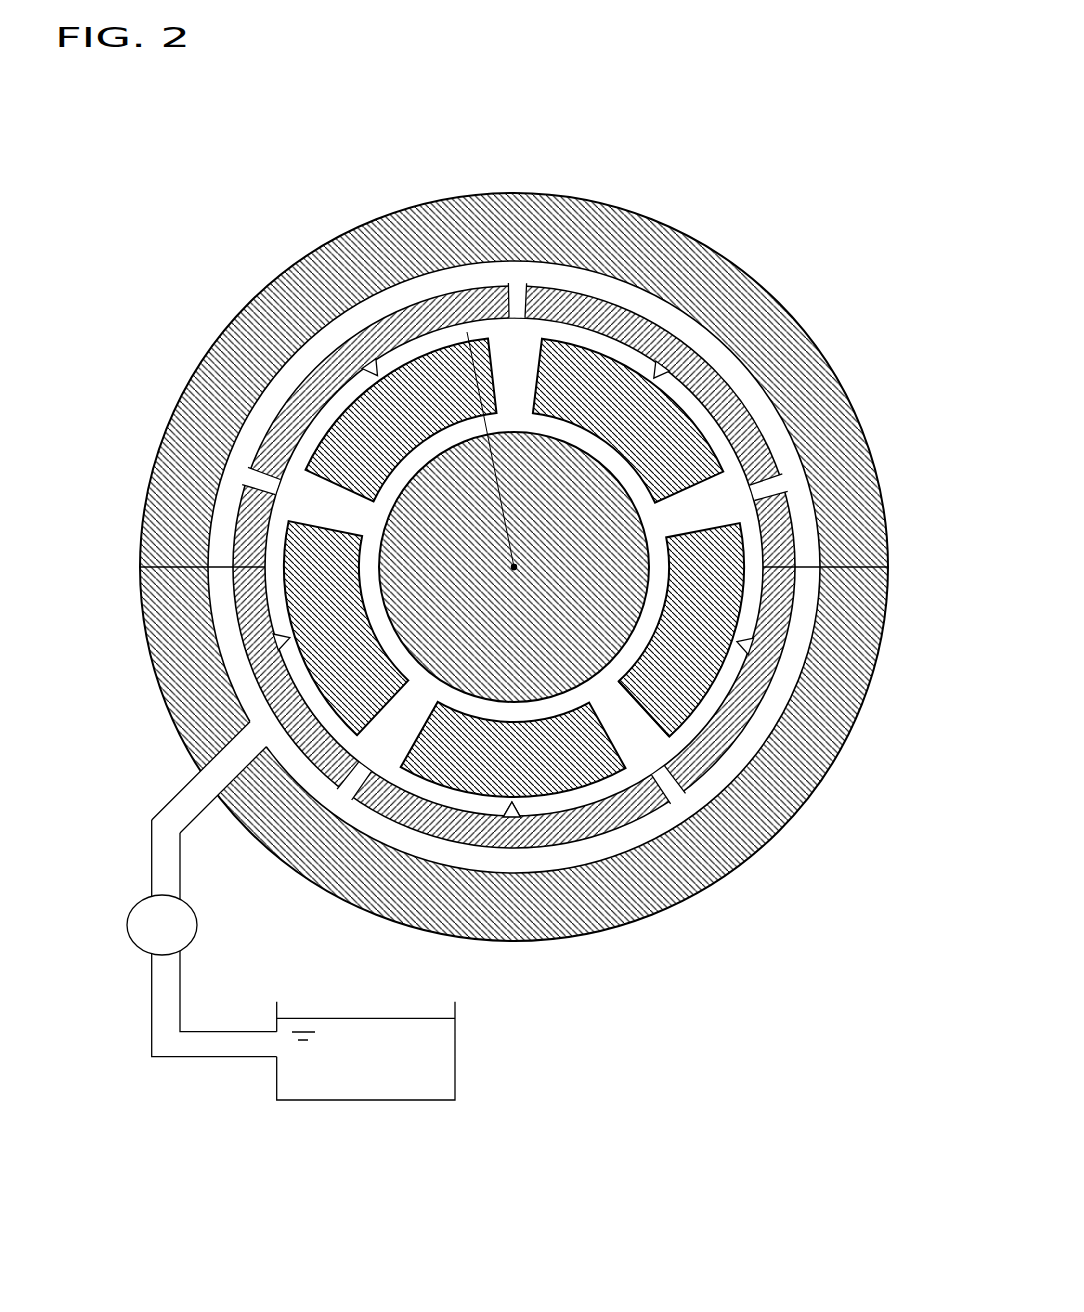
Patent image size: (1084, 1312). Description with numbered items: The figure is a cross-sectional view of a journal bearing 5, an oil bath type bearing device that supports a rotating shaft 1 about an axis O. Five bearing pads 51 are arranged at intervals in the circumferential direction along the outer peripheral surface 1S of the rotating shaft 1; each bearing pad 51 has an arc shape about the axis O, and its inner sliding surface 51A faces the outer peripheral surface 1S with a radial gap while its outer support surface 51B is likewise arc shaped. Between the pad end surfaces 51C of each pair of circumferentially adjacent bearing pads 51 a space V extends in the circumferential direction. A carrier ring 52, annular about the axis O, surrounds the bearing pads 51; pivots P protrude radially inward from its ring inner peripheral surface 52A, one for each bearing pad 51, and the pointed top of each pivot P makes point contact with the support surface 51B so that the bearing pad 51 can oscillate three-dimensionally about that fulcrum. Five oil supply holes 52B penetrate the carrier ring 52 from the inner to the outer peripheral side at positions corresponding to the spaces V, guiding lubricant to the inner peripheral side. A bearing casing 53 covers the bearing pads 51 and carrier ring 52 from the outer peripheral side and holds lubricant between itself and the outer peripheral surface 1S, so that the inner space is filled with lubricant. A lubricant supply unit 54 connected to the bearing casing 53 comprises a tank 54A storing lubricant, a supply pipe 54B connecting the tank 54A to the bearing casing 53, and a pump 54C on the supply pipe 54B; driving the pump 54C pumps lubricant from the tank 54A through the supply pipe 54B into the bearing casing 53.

The rotating shaft 1 is at (511, 592).
The outer peripheral surface 1S is at (262, 592).
The journal bearing 5 is at (506, 655).
The bearing pad 51 is at (528, 605).
The sliding surface 51A is at (505, 702).
The support surface 51B is at (535, 815).
The pad end surface 51C is at (660, 723).
The carrier ring 52 is at (510, 538).
The ring inner peripheral surface 52A is at (480, 320).
The oil supply hole 52B is at (519, 290).
The bearing casing 53 is at (706, 270).
The lubricant supply unit 54 is at (250, 966).
The tank 54A is at (406, 1100).
The supply pipe 54B is at (150, 1010).
The pump 54C is at (128, 928).
The pivot P is at (790, 636).
The space V is at (643, 706).
The axis O is at (345, 255).